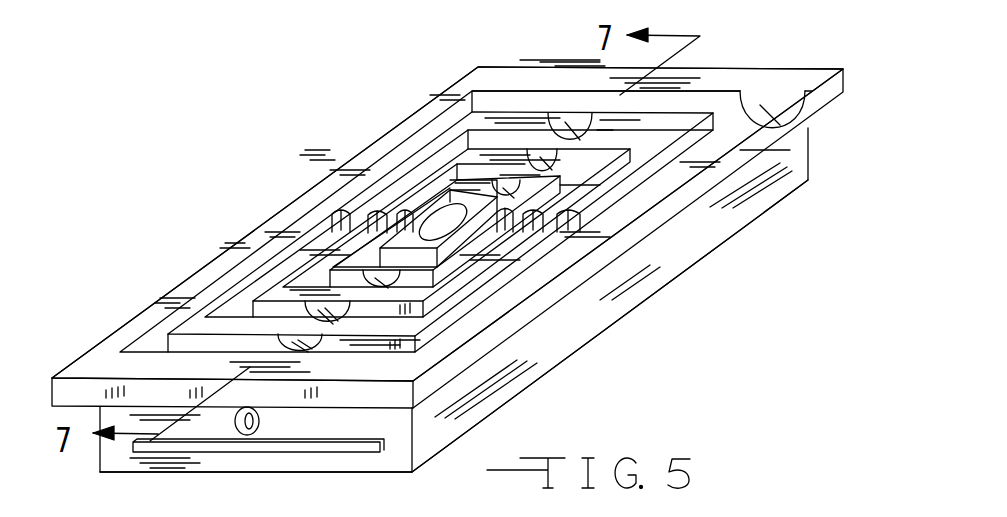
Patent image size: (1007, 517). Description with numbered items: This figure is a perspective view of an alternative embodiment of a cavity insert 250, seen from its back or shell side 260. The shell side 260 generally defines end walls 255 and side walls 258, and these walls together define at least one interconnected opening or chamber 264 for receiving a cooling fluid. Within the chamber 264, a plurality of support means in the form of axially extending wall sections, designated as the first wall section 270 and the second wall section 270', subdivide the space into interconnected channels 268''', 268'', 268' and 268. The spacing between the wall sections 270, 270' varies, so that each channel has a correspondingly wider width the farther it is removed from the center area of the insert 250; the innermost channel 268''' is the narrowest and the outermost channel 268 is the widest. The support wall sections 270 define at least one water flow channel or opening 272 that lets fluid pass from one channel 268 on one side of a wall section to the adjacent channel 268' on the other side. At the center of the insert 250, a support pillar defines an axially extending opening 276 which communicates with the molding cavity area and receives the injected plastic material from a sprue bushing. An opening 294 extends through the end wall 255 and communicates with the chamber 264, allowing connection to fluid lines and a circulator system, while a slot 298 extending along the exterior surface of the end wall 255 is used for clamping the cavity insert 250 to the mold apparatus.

The cavity insert 250 is at (128, 238).
The end wall 255 is at (278, 462).
The side walls 258 is at (603, 312).
The back or shell side 260 is at (105, 339).
The interconnected opening or chamber 264 is at (198, 308).
The channel 268 is at (641, 235).
The channel 268' is at (683, 200).
The channel 268'' is at (718, 164).
The channel 268''' is at (818, 123).
The support means wall section 270 is at (417, 169).
The second wall section 270' is at (438, 121).
The water flow channel or opening 272 is at (592, 115).
The axially extending opening 276 is at (433, 200).
The opening 294 is at (260, 420).
The slot 298 is at (385, 448).